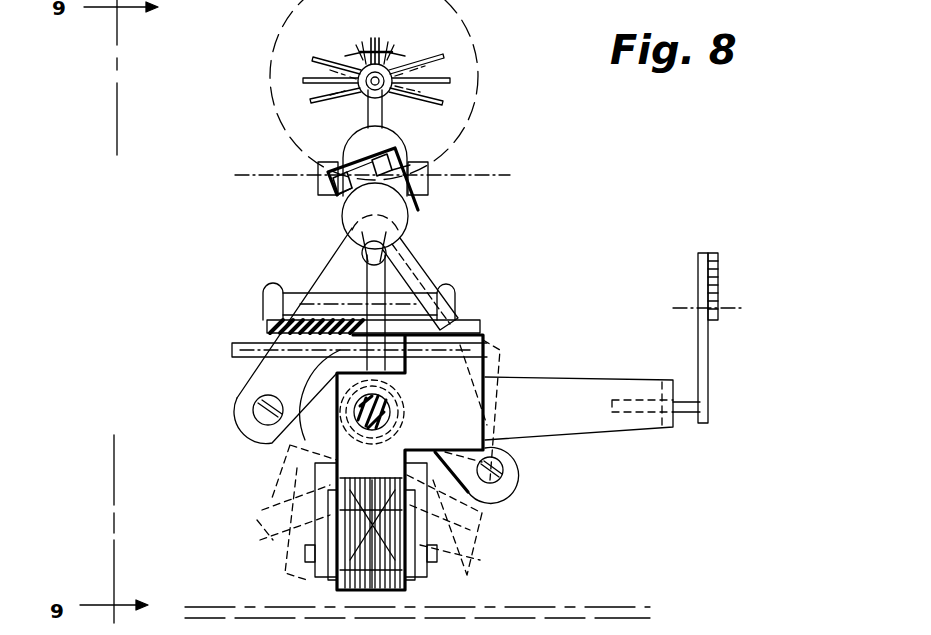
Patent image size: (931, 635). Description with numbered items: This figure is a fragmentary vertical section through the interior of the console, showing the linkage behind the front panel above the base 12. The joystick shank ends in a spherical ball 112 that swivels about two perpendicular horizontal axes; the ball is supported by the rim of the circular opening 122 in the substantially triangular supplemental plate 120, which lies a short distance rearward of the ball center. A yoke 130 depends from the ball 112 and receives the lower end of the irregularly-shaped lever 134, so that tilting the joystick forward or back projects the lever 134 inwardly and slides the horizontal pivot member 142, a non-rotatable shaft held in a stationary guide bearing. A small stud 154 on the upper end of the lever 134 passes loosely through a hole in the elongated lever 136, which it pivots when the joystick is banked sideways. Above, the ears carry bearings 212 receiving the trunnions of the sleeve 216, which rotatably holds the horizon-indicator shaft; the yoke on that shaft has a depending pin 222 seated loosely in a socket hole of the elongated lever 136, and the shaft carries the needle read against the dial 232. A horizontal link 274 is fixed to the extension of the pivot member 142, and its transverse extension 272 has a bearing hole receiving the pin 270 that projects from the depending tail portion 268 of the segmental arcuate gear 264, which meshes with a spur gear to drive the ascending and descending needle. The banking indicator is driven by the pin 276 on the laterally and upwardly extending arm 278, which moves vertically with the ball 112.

The base 12 is at (585, 612).
The spherical ball 112 is at (290, 445).
The supplemental plate 120 is at (245, 378).
The circular opening 122 is at (332, 288).
The yoke 130 is at (268, 502).
The irregularly-shaped link or lever 134 is at (430, 600).
The elongated lever 136 is at (262, 300).
The horizontal pivot member 142 is at (398, 416).
The stud 154 is at (458, 292).
The bearings 212 is at (330, 172).
The sleeve 216 is at (397, 142).
The pin 222 is at (415, 262).
The dial 232 is at (292, 24).
The segmental arcuate gear 264 is at (718, 276).
The tail portion 268 is at (708, 362).
The pin 270 is at (680, 428).
The transverse extension 272 is at (666, 380).
The horizontal link 274 is at (553, 377).
The pin 276 is at (366, 110).
The arm 278 is at (452, 72).